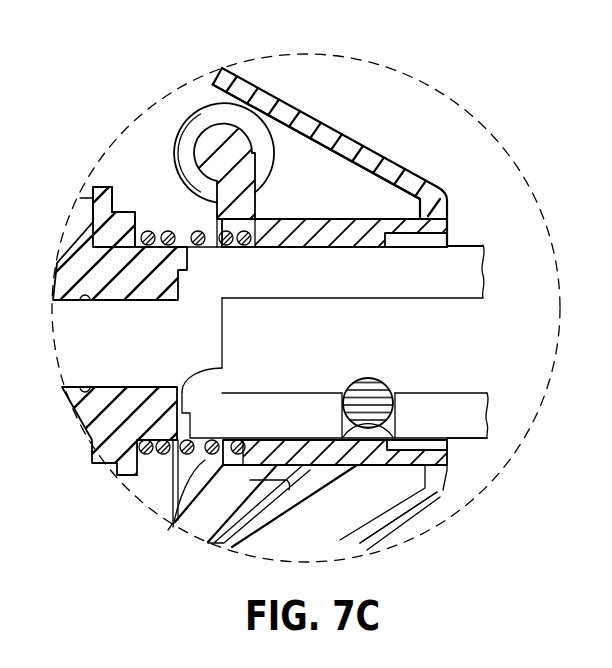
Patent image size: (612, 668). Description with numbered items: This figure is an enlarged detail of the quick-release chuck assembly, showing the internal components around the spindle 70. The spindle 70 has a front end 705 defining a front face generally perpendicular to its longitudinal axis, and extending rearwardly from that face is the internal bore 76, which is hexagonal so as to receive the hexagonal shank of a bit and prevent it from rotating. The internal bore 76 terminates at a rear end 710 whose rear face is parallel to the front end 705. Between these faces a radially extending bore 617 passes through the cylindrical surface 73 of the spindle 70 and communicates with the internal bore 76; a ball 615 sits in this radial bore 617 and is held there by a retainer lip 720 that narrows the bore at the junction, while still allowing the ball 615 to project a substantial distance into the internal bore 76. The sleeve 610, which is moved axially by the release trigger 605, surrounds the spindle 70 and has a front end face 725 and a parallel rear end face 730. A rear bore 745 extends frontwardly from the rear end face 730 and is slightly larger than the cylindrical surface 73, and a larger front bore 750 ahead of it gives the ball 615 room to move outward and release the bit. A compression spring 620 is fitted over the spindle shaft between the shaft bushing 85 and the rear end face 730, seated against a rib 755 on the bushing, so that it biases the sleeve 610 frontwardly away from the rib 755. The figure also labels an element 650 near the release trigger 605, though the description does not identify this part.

The spindle 70 is at (277, 262).
The cylindrical surface 73 is at (470, 245).
The internal bore 76 is at (364, 357).
The shaft bushing 85 is at (65, 246).
The release trigger 605 is at (258, 128).
The sleeve 610 is at (368, 457).
The ball 615 is at (383, 380).
The radial bore 617 is at (395, 417).
The compression spring 620 is at (200, 228).
The ring 650 is at (222, 142).
The front end 705 is at (487, 413).
The rear end 710 is at (184, 395).
The retainer lip 720 is at (395, 395).
The front end face 725 is at (470, 245).
The rear end face 730 is at (173, 525).
The rear bore 745 is at (395, 188).
The front bore 750 is at (427, 217).
The rib 755 is at (123, 212).